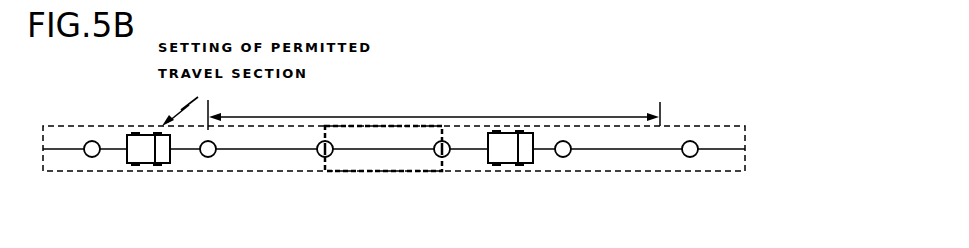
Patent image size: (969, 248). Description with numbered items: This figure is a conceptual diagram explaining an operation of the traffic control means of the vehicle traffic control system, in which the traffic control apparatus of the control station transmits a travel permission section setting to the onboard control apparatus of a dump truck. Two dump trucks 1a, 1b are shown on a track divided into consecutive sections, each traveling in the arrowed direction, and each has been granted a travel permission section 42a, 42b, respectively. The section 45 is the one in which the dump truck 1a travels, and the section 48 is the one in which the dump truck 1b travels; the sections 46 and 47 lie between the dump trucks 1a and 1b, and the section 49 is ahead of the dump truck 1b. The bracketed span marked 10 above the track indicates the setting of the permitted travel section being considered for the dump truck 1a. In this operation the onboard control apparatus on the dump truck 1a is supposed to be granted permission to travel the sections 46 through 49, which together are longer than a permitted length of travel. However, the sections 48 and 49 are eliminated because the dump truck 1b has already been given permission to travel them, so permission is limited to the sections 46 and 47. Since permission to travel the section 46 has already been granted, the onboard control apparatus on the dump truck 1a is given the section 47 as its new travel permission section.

The travel permission section 42a is at (68, 124).
The travel permission section 42b is at (607, 123).
The dump truck 1a is at (127, 136).
The dump truck 1b is at (511, 132).
The permitted travel section 10 is at (427, 115).
The section 45 is at (92, 175).
The section 46 is at (208, 175).
The section 47 is at (325, 175).
The section 48 is at (442, 175).
The section 49 is at (563, 175).